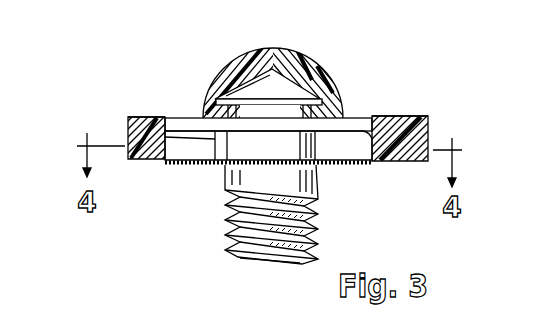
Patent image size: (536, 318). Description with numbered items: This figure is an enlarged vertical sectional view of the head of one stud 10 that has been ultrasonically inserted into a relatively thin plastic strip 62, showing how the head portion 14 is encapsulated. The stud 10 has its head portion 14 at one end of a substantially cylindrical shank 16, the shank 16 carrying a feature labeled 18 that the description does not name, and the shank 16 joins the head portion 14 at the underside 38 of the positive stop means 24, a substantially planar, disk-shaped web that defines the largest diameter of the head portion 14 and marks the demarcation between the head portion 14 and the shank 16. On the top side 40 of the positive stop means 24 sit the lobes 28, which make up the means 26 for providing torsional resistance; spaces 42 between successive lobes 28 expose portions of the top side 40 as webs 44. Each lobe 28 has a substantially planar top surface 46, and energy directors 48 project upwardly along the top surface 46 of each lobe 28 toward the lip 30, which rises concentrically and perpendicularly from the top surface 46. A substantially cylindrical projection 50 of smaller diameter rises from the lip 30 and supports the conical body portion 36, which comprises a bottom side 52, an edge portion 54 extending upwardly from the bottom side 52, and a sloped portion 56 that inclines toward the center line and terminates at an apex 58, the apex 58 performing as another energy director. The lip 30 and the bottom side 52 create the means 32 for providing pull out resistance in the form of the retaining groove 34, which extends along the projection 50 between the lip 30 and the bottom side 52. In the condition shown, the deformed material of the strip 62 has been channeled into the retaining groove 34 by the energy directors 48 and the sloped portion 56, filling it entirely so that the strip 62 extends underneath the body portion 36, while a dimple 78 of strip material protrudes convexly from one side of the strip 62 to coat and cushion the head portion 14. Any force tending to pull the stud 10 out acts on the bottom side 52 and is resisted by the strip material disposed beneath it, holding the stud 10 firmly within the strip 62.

The stud 10 is at (321, 248).
The head portion 14 is at (225, 171).
The shank 16 is at (265, 260).
The threads 18 is at (226, 246).
The positive stop means 24 is at (159, 166).
The means for providing torsional resistance 26 is at (410, 150).
The lobes 28 is at (128, 122).
The lip 30 is at (338, 117).
The means for providing pull out resistance 32 is at (318, 83).
The retaining groove 34 is at (212, 108).
The body portion 36 is at (281, 61).
The underside 38 is at (348, 165).
The top side 40 is at (385, 165).
The spaces 42 is at (250, 153).
The webs 44 is at (312, 156).
The top surface 46 is at (378, 116).
The energy directors 48 is at (159, 117).
The projection 50 is at (203, 118).
The bottom side 52 is at (218, 95).
The edge portion 54 is at (336, 112).
The sloped portion 56 is at (226, 100).
The apex 58 is at (246, 64).
The strip 62 is at (128, 128).
The dimple 78 is at (250, 60).